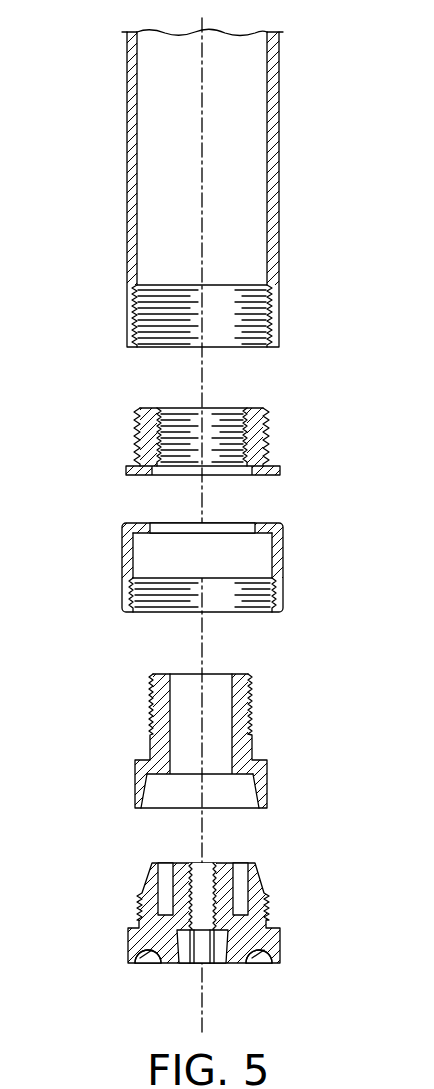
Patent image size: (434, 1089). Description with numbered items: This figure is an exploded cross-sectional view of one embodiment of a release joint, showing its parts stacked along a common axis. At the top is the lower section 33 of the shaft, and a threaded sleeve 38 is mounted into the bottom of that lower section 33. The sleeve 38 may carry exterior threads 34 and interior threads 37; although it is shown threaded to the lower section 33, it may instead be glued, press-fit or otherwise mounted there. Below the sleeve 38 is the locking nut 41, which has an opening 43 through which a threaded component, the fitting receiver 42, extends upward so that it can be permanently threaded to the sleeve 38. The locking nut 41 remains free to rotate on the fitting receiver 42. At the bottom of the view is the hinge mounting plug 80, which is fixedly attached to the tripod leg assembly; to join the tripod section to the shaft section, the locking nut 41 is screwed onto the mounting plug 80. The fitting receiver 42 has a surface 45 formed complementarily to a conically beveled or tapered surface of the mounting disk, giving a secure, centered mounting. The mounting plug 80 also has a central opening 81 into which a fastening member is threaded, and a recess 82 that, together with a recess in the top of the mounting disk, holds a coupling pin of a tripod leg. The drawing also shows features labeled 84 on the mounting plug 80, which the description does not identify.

The lower section of shaft 33 is at (279, 232).
The exterior threads 34 is at (158, 420).
The interior threads 37 is at (198, 420).
The threaded sleeve 38 is at (208, 420).
The locking nut 41 is at (157, 546).
The opening 43 is at (188, 527).
The fitting receiver 42 is at (158, 756).
The surface of fitting receiver 45 is at (148, 793).
The hinge mounting plug 80 is at (191, 938).
The central opening 81 is at (205, 922).
The recess 82 is at (260, 965).
The slots 84 is at (262, 885).